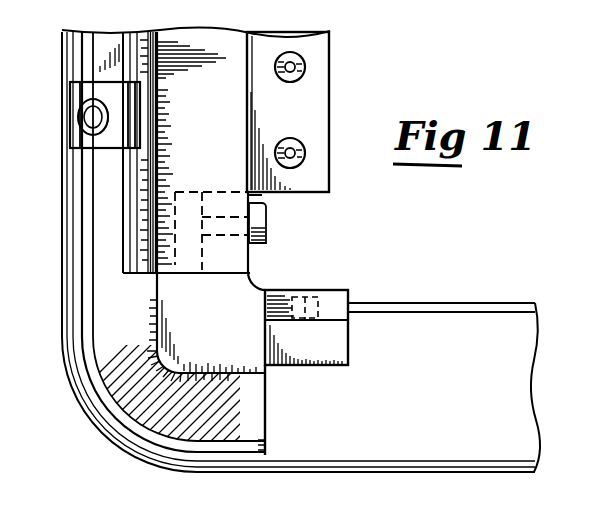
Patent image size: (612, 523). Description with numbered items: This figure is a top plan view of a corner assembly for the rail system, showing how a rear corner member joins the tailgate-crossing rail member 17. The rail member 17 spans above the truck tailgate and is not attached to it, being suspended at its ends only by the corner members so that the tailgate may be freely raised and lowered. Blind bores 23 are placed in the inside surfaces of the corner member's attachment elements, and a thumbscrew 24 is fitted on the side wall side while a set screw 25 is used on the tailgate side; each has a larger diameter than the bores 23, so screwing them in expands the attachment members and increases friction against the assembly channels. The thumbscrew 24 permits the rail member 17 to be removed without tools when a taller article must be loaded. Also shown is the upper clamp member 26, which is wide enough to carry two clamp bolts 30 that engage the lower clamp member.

The rail member 17 is at (98, 188).
The blind bores 23 is at (222, 237).
The thumbscrew 24 is at (267, 217).
The set screw 25 is at (313, 292).
The upper clamp member 26 is at (331, 113).
The clamp bolt 30 is at (305, 68).